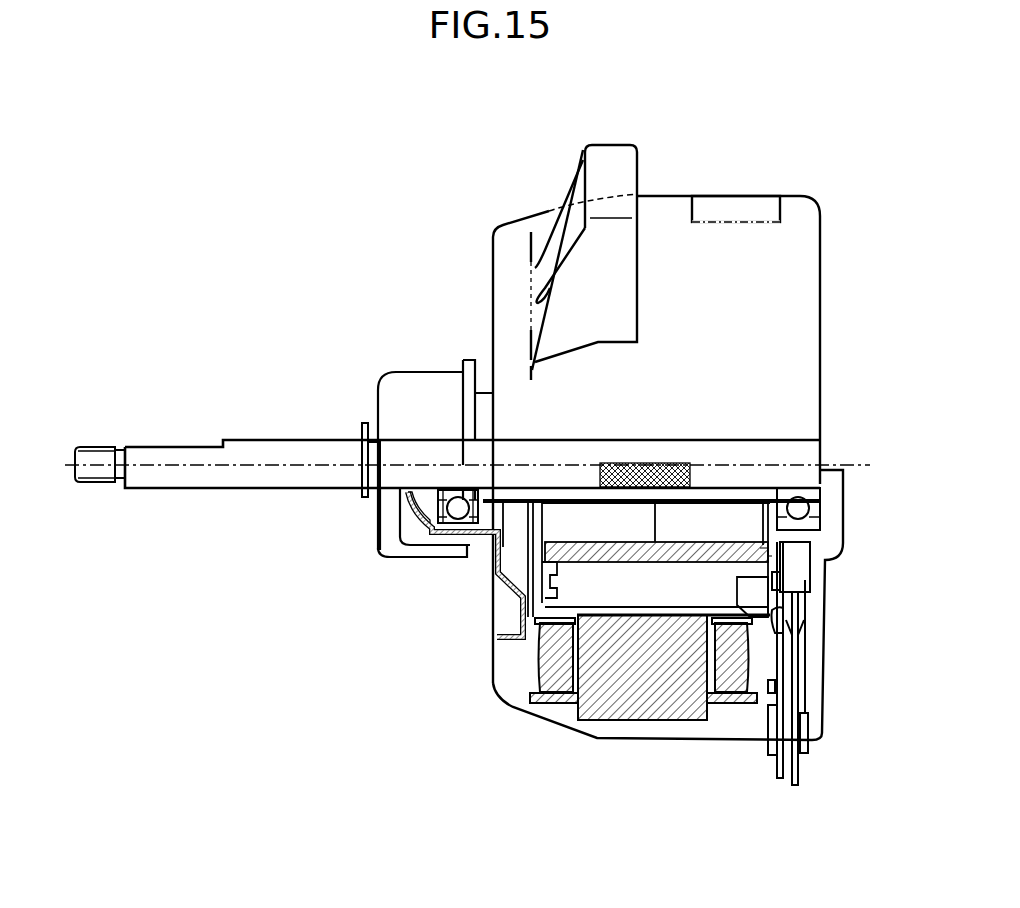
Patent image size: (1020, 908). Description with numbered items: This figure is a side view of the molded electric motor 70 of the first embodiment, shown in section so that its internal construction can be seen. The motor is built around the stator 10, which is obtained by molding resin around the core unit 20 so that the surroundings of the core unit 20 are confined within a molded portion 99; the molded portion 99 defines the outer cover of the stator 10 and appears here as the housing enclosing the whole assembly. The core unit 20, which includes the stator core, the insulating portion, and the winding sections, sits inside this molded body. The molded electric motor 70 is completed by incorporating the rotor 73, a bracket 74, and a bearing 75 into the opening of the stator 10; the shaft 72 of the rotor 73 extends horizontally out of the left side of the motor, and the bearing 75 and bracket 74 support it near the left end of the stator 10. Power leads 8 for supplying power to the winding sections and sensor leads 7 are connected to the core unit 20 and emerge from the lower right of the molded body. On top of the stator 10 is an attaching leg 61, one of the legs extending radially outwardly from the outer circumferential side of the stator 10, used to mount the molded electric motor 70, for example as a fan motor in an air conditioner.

The molded electric motor 70 is at (760, 121).
The attaching leg 61 is at (606, 150).
The stator 10 is at (820, 232).
The molded portion 99 is at (806, 314).
The shaft 72 is at (258, 447).
The bearing 75 is at (455, 523).
The bracket 74 is at (510, 590).
The rotor 73 is at (775, 566).
The core unit 20 is at (612, 704).
The sensor lead 7 is at (797, 770).
The power lead 8 is at (775, 773).